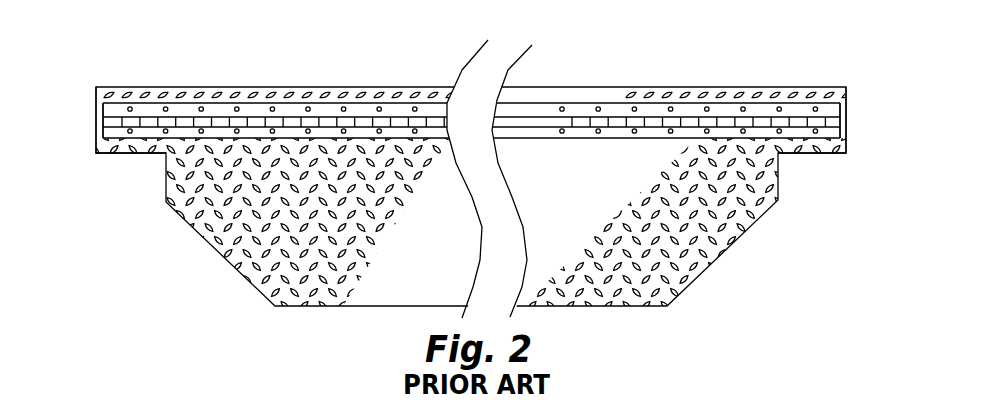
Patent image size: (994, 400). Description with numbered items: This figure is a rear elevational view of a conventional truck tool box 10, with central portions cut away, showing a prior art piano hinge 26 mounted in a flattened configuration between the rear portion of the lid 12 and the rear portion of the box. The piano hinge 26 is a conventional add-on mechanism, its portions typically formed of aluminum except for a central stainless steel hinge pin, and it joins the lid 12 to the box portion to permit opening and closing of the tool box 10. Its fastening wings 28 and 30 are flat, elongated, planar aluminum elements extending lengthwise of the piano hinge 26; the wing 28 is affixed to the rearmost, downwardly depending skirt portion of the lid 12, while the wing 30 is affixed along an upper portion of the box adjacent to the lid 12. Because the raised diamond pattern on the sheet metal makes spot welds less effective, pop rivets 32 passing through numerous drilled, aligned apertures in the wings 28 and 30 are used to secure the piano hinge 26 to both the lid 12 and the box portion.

The tool box 10 is at (580, 60).
The lid 12 is at (334, 87).
The piano hinge 26 is at (255, 120).
The fastening wing 28 is at (830, 108).
The fastening wing 30 is at (111, 132).
The pop rivets 32 is at (717, 105).